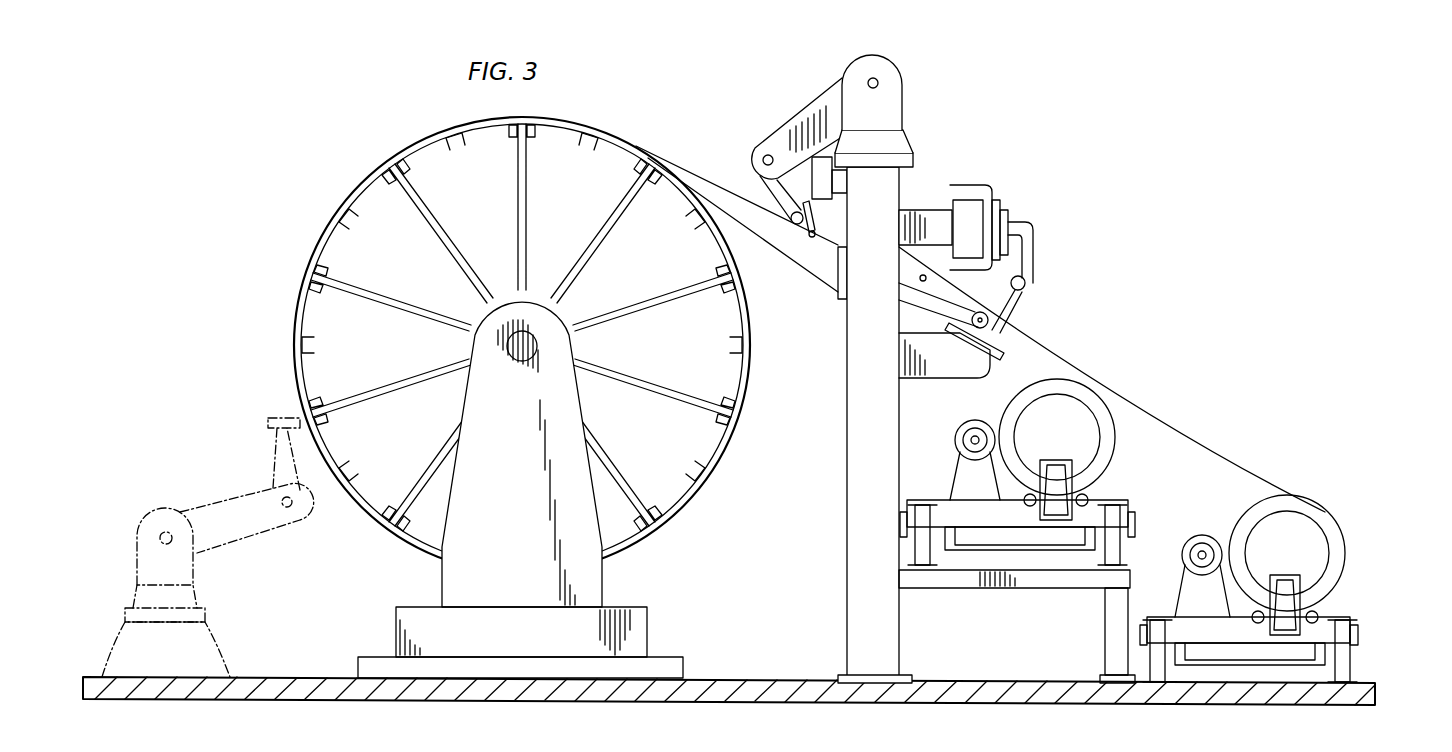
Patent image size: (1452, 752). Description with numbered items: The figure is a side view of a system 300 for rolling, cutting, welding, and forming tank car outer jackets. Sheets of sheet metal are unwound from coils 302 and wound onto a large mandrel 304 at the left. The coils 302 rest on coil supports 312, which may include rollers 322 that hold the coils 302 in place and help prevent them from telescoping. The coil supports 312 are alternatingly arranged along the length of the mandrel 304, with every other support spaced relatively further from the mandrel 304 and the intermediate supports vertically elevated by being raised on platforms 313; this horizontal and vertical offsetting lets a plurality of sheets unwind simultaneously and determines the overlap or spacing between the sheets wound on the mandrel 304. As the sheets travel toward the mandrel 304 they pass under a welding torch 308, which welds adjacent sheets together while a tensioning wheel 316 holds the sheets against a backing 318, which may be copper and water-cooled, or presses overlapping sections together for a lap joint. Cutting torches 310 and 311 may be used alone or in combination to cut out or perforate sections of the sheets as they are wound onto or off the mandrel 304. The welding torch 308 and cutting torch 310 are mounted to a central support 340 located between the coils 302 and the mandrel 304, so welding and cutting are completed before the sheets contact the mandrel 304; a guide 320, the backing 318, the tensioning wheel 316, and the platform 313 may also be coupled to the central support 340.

The system 300 is at (1277, 287).
The coils 302 is at (1115, 440).
The mandrel 304 is at (296, 312).
The welding torch 308 is at (1036, 264).
The cutting torch 310 is at (815, 100).
The cutting torch 311 is at (228, 497).
The coil supports 312 is at (1136, 520).
The platforms 313 is at (1058, 590).
The tensioning wheel 316 is at (1000, 300).
The backing 318 is at (918, 380).
The guide 320 is at (790, 262).
The rollers 322 is at (955, 433).
The central support 340 is at (847, 513).